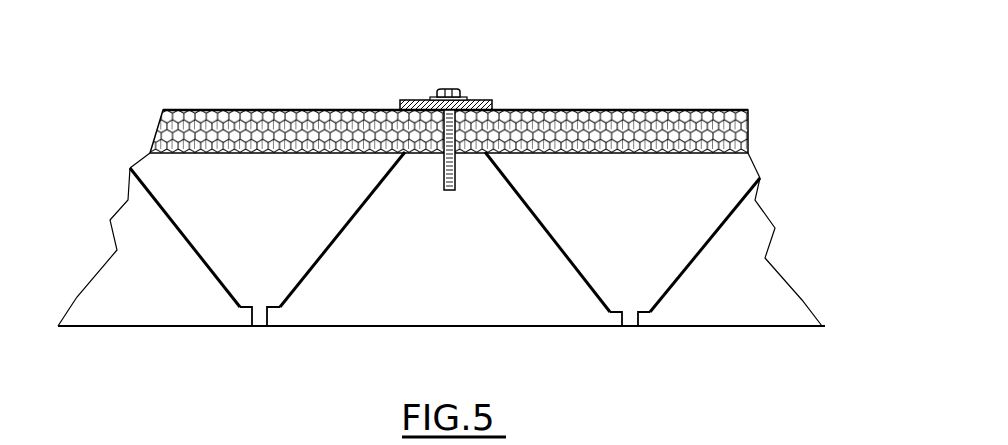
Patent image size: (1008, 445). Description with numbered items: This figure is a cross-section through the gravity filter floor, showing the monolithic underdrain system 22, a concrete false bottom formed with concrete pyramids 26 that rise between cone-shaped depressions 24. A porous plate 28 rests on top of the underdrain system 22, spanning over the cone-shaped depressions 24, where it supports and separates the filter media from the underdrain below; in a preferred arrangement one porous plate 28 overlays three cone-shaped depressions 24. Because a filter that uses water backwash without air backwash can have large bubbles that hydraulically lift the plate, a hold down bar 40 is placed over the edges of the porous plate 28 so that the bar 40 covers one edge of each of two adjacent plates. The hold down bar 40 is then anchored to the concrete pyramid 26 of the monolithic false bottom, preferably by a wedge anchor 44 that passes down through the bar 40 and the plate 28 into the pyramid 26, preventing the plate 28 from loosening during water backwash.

The monolithic underdrain system 22 is at (786, 199).
The cone-shaped depression 24 is at (222, 253).
The concrete pyramid 26 is at (448, 312).
The porous plate 28 is at (626, 110).
The hold down bar 40 is at (485, 100).
The wedge anchor 44 is at (443, 89).